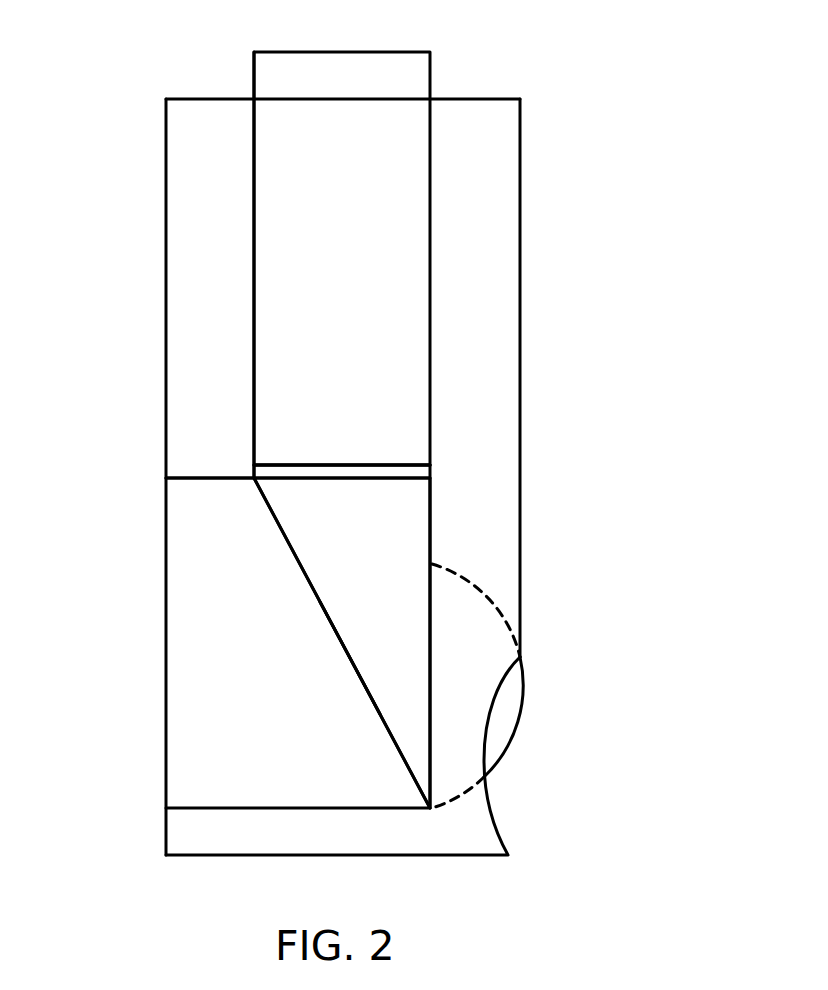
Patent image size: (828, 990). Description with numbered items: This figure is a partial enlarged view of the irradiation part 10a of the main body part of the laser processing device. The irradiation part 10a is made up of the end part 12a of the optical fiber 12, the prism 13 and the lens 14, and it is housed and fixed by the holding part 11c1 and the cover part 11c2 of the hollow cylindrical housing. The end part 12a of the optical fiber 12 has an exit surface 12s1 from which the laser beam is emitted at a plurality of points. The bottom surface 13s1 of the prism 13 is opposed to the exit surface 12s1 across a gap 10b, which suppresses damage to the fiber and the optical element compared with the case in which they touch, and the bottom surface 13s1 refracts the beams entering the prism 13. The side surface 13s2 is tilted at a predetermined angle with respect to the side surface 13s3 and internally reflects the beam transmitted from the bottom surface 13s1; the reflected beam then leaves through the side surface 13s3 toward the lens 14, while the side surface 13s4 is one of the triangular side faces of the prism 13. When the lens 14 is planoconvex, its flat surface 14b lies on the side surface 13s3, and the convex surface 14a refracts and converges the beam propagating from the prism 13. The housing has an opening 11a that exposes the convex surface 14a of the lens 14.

The irradiation part 10a is at (371, 449).
The gap 10b is at (410, 470).
The opening 11a is at (498, 827).
The holding part 11c1 is at (522, 328).
The cover part 11c2 is at (163, 562).
The optical fiber 12 is at (288, 181).
The end part 12a is at (244, 422).
The exit surface 12s1 is at (383, 463).
The prism 13 is at (410, 518).
The bottom surface 13s1 is at (309, 483).
The side surface 13s2 is at (333, 630).
The side surface 13s3 is at (431, 551).
The side surface 13s4 is at (377, 643).
The lens 14 is at (538, 686).
The convex surface 14a is at (522, 722).
The flat surface 14b is at (431, 615).